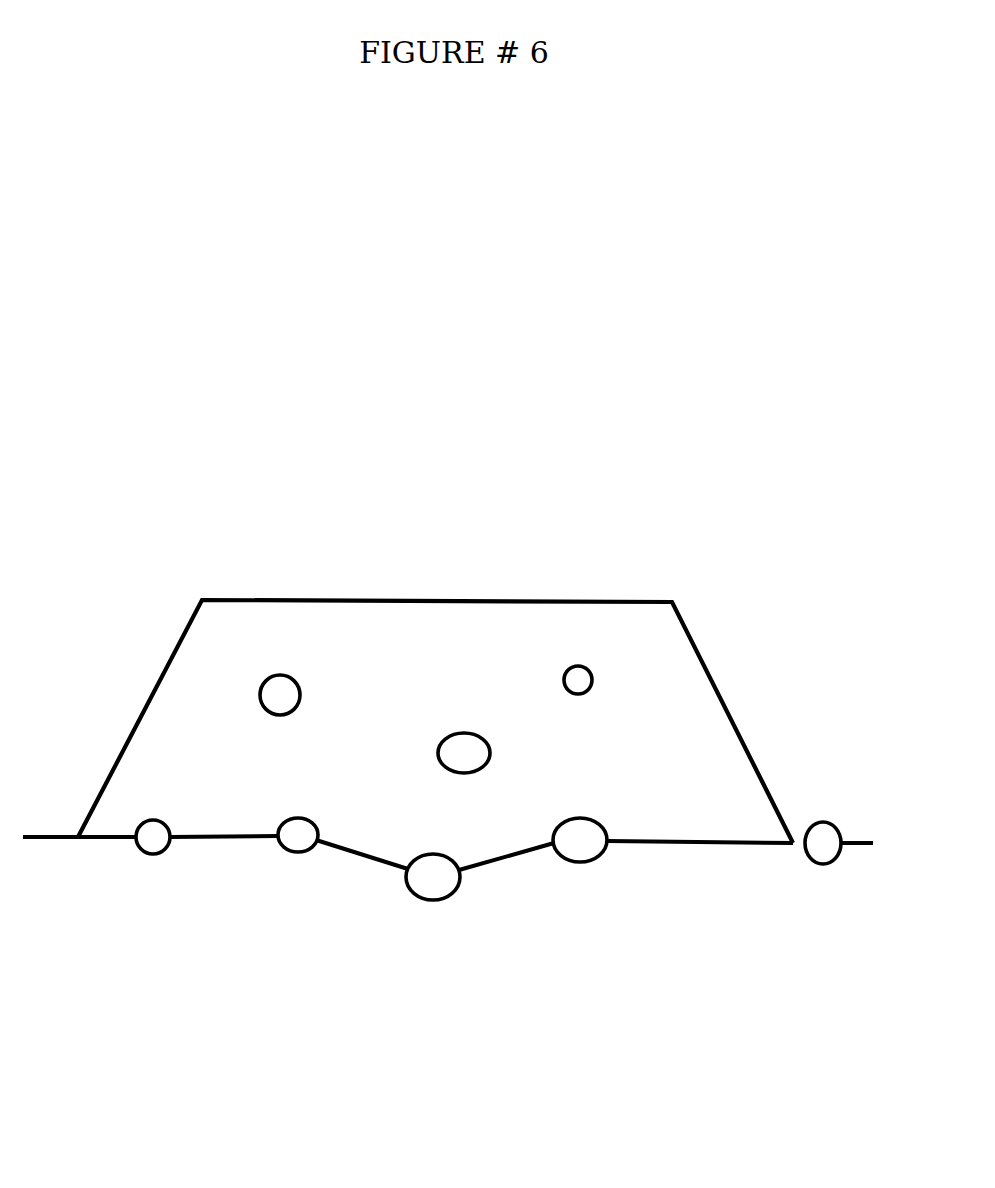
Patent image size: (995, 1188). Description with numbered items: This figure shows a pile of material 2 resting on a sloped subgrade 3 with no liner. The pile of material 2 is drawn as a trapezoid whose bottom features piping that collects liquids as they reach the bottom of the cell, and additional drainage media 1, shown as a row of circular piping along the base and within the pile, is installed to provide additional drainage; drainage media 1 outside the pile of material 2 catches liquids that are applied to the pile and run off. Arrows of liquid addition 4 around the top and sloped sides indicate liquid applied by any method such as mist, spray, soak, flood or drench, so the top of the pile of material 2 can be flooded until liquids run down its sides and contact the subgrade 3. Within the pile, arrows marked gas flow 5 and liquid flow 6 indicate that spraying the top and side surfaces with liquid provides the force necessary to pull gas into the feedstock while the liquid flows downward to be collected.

The drainage media 1 is at (280, 700).
The pile of material 2 is at (435, 721).
The subgrade 3 is at (448, 902).
The liquid addition 4 is at (270, 590).
The gas flow 5 is at (220, 790).
The liquid flow 6 is at (391, 835).